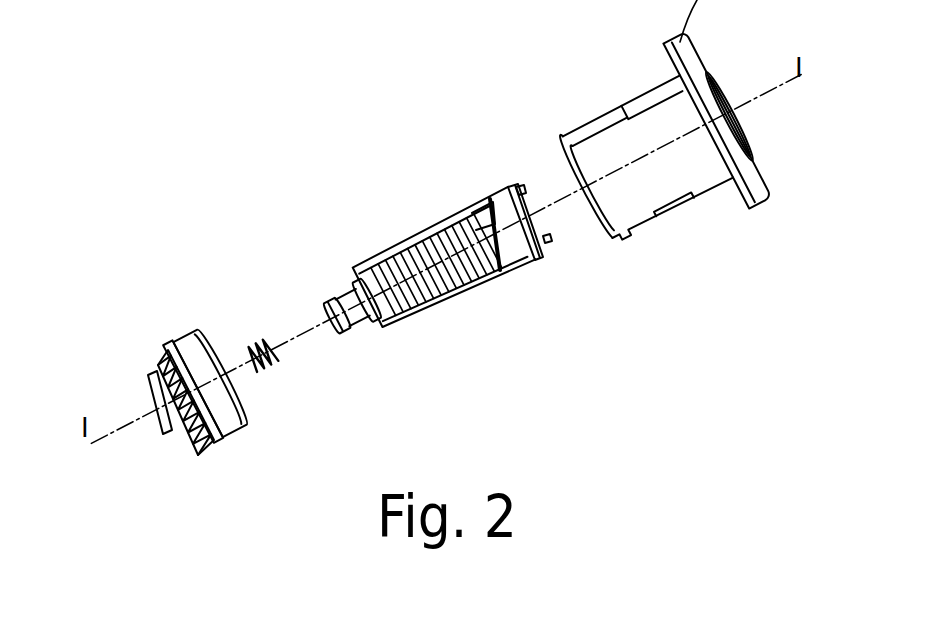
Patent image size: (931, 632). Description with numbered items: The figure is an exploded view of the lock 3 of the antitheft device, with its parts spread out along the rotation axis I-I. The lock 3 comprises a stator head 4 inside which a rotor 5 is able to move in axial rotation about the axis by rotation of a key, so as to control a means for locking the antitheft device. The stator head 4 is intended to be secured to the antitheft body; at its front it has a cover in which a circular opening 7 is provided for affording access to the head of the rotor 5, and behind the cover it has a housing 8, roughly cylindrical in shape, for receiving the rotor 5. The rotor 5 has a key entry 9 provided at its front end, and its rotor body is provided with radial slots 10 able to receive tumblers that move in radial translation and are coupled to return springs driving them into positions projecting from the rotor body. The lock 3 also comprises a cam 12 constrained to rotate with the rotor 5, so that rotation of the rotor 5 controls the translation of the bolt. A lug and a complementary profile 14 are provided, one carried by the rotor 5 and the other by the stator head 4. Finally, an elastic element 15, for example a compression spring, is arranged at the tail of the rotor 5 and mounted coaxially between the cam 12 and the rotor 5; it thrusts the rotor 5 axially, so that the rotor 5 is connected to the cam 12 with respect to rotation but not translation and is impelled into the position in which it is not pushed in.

The lock 3 is at (460, 115).
The stator head 4 is at (666, 170).
The rotor 5 is at (463, 246).
The circular opening 7 is at (722, 88).
The housing 8 is at (648, 114).
The key entry 9 is at (529, 190).
The radial slots 10 is at (417, 318).
The cam 12 is at (184, 348).
The complementary profile 14 is at (505, 249).
The elastic element 15 is at (272, 360).